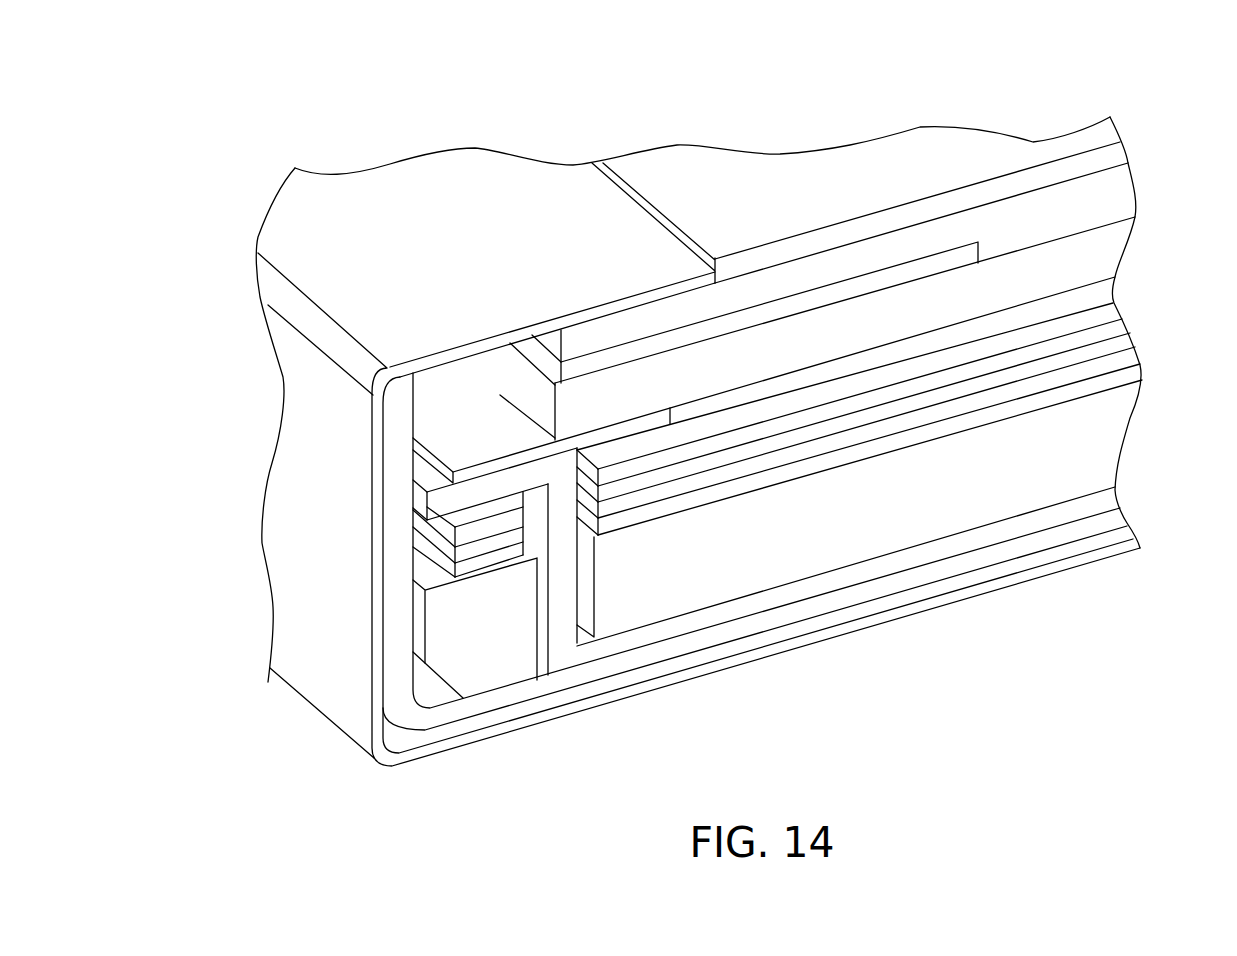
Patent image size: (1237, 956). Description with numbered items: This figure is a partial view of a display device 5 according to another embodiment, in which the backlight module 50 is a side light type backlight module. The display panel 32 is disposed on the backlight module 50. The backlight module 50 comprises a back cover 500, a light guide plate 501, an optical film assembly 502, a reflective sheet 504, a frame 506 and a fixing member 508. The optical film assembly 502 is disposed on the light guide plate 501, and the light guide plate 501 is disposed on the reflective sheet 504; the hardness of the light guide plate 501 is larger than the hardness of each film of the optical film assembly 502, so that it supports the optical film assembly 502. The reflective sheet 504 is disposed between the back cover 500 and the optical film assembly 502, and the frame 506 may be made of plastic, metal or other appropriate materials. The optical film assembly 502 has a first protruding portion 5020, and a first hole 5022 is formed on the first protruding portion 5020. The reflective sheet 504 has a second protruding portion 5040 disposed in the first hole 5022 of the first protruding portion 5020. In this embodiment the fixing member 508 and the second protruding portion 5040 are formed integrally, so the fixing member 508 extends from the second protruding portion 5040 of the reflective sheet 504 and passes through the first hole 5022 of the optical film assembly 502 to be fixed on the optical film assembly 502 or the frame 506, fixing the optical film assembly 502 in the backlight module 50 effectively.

The display device 5 is at (830, 98).
The display panel 32 is at (1142, 297).
The backlight module 50 is at (888, 511).
The light guide plate 501 is at (1060, 480).
The optical film assembly 502 is at (935, 412).
The reflective sheet 504 is at (882, 570).
The back cover 500 is at (810, 640).
The frame 506 is at (397, 595).
The fixing member 508 is at (442, 497).
The first protruding portion 5020 is at (490, 543).
The second protruding portion 5040 is at (558, 583).
The first hole 5022 is at (585, 537).